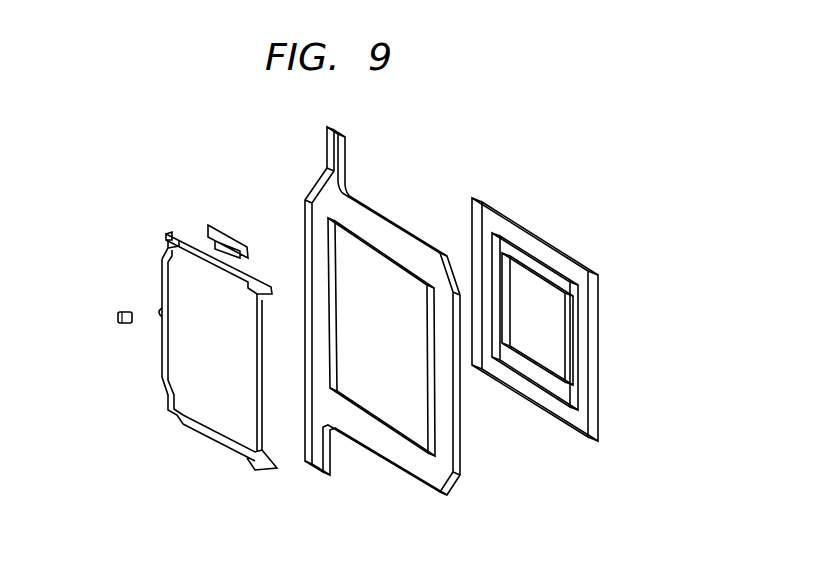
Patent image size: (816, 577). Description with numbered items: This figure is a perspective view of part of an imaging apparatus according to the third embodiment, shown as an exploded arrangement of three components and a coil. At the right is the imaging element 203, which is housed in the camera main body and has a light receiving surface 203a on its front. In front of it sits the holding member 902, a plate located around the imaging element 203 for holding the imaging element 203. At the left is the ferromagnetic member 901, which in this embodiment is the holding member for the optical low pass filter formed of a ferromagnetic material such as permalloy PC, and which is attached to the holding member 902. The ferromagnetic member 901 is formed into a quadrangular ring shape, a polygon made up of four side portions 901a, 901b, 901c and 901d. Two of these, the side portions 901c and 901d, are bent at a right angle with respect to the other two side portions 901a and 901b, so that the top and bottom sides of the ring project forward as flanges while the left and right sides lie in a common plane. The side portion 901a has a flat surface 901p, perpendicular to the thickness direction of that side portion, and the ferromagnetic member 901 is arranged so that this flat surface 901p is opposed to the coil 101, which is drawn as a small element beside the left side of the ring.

The coil 101 is at (122, 308).
The ferromagnetic member 901 is at (202, 331).
The side portion 901a is at (159, 347).
The side portion 901b is at (265, 413).
The side portion 901c is at (257, 272).
The side portion 901d is at (225, 453).
The flat surface 901p is at (164, 313).
The holding member 902 is at (378, 208).
The imaging element 203 is at (535, 316).
The light receiving surface 203a is at (542, 337).